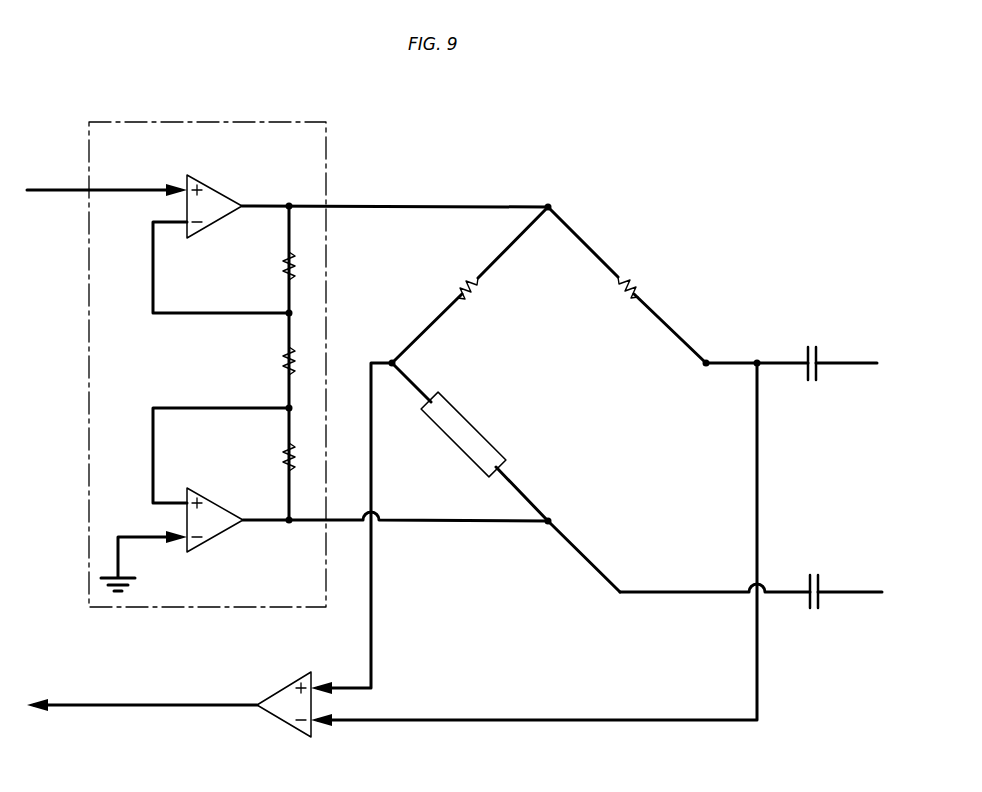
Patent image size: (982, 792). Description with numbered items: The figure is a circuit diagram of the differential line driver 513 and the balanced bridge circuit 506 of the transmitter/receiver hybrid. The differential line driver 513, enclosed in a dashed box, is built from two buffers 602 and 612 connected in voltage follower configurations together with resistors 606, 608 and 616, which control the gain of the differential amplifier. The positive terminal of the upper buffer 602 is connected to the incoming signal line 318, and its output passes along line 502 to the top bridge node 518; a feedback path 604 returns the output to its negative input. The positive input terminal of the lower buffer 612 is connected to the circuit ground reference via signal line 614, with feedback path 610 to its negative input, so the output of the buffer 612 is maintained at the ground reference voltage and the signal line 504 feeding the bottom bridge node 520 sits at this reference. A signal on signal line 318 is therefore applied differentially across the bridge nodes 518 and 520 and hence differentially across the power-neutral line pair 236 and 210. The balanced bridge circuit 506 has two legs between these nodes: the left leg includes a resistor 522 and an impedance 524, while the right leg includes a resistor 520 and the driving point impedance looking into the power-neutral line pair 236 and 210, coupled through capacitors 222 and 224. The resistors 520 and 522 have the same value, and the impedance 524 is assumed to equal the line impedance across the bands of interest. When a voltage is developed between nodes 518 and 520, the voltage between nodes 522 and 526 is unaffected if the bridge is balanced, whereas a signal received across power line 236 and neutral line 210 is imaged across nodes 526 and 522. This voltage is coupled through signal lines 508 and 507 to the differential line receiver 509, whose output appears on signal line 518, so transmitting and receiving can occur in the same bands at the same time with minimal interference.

The balanced bridge circuit 506 is at (112, 93).
The differential line driver 513 is at (240, 122).
The signal line 318 is at (60, 190).
The buffer 602 is at (223, 188).
The feedback line 604 is at (155, 290).
The resistor 606 is at (288, 268).
The resistor 608 is at (288, 363).
The feedback line 610 is at (155, 458).
The resistor 616 is at (288, 468).
The buffer 612 is at (225, 534).
The signal line 614 is at (138, 537).
The first drive line 502 is at (436, 206).
The signal line 504 is at (455, 522).
The top bridge node 518 is at (548, 207).
The resistor 522 is at (468, 286).
The resistor 520 is at (627, 290).
The impedance 524 is at (478, 422).
The bridge node 526 is at (706, 360).
The capacitor 222 is at (820, 350).
The power line 236 is at (849, 365).
The signal line 507 is at (756, 480).
The capacitor 224 is at (820, 578).
The neutral line 210 is at (851, 594).
The signal line 508 is at (372, 606).
The differential line receiver 509 is at (268, 718).